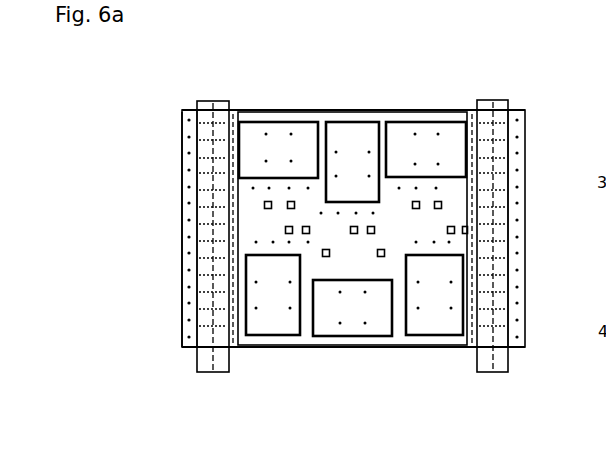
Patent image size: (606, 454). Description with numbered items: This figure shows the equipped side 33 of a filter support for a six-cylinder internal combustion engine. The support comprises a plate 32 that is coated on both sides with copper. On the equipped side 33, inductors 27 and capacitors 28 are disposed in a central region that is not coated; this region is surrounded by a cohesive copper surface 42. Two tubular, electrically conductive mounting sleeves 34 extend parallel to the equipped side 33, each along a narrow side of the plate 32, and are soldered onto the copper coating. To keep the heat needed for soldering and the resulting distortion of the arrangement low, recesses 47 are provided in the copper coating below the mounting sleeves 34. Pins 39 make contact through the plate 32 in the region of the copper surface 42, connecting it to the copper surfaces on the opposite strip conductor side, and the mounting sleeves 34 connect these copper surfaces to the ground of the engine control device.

The inductor 27 is at (365, 132).
The capacitor 28 is at (354, 226).
The plate 32 is at (273, 360).
The equipped side 33 is at (403, 326).
The mounting sleeve 34 is at (222, 100).
The pin 39 is at (182, 300).
The cohesive copper surface 42 is at (263, 110).
The recess 47 is at (182, 178).